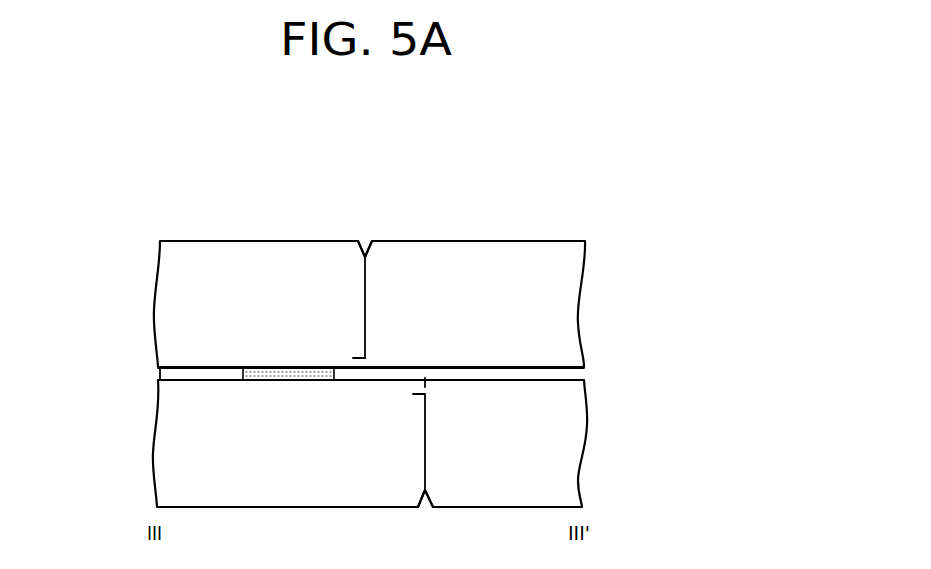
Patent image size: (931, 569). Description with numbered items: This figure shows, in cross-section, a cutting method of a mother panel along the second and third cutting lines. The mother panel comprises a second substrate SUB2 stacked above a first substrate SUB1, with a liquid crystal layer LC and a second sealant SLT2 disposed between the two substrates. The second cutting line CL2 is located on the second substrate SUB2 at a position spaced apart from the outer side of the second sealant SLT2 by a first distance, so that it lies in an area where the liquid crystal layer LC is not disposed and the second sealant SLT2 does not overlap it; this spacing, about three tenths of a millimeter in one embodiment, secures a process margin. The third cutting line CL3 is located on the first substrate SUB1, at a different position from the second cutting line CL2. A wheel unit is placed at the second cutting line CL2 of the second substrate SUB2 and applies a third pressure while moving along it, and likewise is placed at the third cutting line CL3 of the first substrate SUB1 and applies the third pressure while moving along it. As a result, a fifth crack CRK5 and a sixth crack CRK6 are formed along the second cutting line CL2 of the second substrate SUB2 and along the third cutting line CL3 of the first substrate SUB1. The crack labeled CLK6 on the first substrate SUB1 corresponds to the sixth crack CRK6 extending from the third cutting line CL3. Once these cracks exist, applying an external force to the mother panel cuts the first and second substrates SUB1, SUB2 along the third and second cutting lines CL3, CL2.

The second substrate SUB2 is at (570, 315).
The first substrate SUB1 is at (570, 437).
The liquid crystal layer LC is at (170, 374).
The second sealant SLT2 is at (285, 373).
The fifth crack CRK5 is at (358, 245).
The sixth crack CRK6 is at (364, 302).
The second cutting line CL2 is at (353, 358).
The third cutting line CL3 is at (413, 394).
The sixth crack CLK6 is at (425, 445).